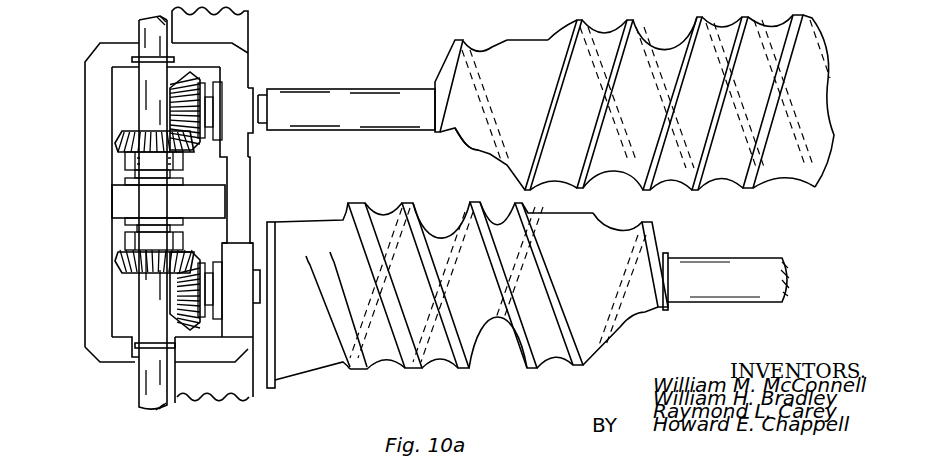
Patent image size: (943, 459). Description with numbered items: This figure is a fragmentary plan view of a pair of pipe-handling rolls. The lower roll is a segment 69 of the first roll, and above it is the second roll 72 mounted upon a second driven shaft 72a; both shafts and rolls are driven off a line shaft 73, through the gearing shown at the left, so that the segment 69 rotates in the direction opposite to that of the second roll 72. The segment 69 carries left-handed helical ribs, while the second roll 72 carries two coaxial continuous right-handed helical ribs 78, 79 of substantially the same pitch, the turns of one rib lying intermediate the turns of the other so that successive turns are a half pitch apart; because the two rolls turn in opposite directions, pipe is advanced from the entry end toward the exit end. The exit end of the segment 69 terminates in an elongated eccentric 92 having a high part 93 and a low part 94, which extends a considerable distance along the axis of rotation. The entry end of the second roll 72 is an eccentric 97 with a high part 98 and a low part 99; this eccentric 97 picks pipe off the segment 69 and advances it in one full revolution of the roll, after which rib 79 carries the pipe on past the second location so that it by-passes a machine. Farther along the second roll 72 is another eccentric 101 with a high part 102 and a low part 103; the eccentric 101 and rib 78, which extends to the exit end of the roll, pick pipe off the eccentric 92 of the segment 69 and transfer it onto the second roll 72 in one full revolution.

The line shaft 73 is at (138, 33).
The second driven shaft 72a is at (352, 88).
The second roll 72 is at (763, 114).
The eccentric 97 is at (518, 60).
The high part 98 is at (548, 42).
The high part 102 is at (643, 42).
The eccentric 101 is at (672, 53).
The low part 99 is at (484, 147).
The helical rib 79 is at (513, 170).
The helical rib 78 is at (608, 135).
The high part 93 is at (573, 218).
The low part 103 is at (617, 211).
The segment 69 is at (312, 220).
The elongated eccentric 92 is at (642, 258).
The low part 94 is at (623, 328).